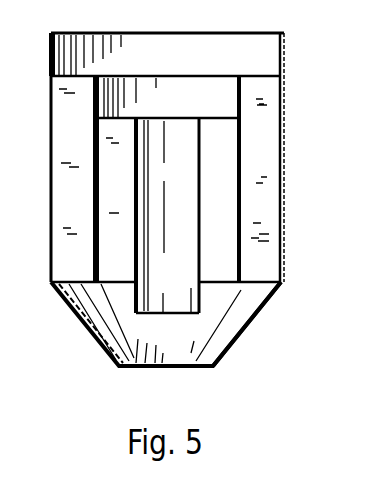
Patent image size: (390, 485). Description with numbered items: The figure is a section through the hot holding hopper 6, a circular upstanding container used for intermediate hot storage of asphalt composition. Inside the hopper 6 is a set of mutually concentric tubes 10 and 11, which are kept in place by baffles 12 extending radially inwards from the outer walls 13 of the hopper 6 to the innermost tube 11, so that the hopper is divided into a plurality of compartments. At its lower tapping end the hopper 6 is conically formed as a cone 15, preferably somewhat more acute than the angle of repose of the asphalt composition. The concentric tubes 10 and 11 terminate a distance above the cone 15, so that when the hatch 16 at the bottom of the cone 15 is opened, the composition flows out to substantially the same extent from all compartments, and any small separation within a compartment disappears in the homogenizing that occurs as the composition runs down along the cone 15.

The hot holding hopper 6 is at (292, 79).
The concentric tube 10 is at (237, 103).
The innermost tube 11 is at (197, 210).
The baffles 12 is at (80, 147).
The outer walls 13 is at (284, 112).
The cone 15 is at (246, 328).
The hatch 16 is at (184, 365).